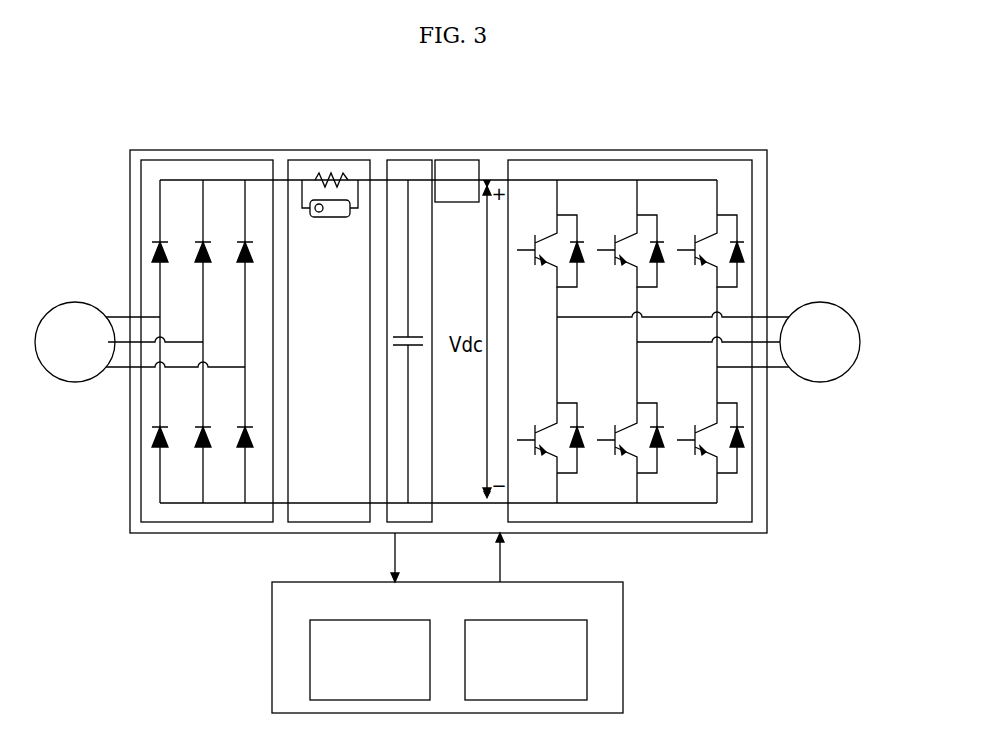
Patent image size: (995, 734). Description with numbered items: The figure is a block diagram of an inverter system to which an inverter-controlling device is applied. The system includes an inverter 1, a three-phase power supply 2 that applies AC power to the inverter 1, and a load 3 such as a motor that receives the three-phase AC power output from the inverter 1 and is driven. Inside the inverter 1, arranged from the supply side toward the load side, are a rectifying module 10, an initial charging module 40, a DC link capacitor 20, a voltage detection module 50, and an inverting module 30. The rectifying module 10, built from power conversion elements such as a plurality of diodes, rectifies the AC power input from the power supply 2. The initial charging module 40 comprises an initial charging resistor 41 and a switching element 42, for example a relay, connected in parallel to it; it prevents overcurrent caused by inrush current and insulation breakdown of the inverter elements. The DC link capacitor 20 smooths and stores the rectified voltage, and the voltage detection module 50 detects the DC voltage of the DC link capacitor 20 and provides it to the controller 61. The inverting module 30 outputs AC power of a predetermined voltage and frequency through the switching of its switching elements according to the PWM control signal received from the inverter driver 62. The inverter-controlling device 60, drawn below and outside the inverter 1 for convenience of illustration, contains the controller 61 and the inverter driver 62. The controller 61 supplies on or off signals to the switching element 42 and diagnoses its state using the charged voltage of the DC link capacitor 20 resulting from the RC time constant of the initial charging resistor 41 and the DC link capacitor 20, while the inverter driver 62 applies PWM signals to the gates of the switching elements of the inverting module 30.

The inverter 1 is at (705, 150).
The three-phase power supply 2 is at (75, 302).
The load 3 is at (820, 302).
The rectifying module 10 is at (205, 160).
The DC link capacitor 20 is at (408, 160).
The inverting module 30 is at (628, 160).
The initial charging module 40 is at (352, 160).
The initial charging resistor 41 is at (316, 176).
The switching element 42 is at (330, 218).
The voltage detection module 50 is at (457, 160).
The inverter-controlling device 60 is at (625, 645).
The controller 61 is at (405, 620).
The inverter driver 62 is at (560, 620).